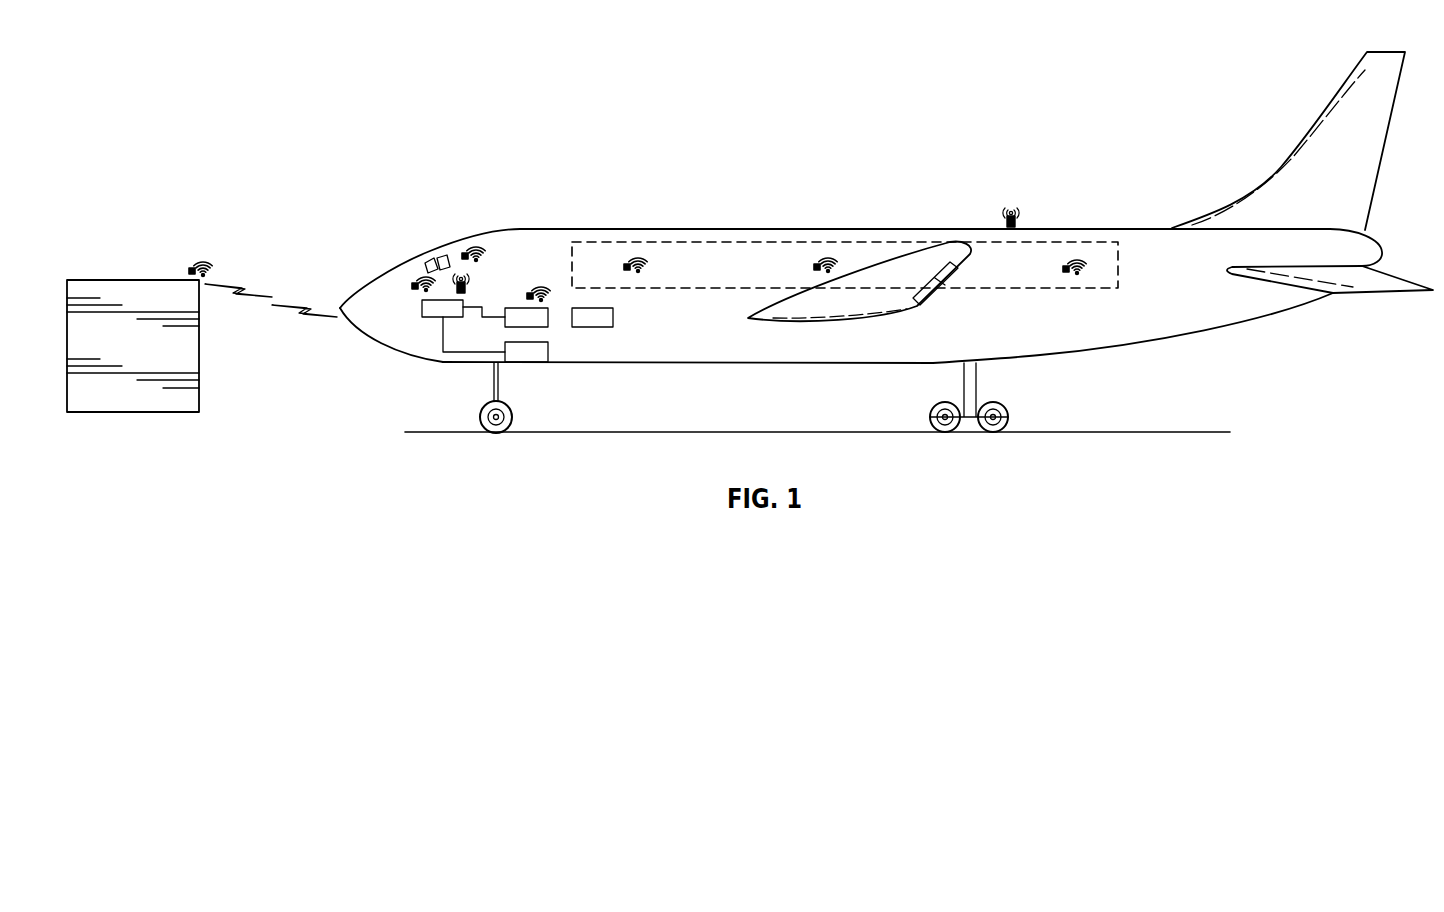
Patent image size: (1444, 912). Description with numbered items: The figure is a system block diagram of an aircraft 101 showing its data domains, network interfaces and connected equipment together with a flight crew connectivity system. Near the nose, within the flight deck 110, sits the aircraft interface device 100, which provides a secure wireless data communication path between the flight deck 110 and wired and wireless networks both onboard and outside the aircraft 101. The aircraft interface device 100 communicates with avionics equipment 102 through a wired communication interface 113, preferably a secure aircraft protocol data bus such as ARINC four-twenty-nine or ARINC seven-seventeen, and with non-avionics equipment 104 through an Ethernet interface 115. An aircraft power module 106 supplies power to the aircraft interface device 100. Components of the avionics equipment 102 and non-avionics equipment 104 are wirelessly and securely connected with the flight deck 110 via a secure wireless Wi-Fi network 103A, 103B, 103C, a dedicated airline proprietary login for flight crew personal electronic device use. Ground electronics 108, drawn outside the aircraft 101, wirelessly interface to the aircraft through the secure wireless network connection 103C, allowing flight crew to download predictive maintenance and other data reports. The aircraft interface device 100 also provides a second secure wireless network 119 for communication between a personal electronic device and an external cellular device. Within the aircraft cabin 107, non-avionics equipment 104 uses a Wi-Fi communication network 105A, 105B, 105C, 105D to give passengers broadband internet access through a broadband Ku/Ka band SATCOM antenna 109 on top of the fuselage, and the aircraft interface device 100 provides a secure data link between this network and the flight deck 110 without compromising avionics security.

The aircraft interface device (AID) 100 is at (428, 318).
The aircraft 101 is at (1203, 318).
The avionics equipment 102 is at (530, 353).
The secure wireless Wi-Fi network 103A is at (424, 288).
The secure wireless Wi-Fi network 103B is at (475, 244).
The secure wireless network connection 103C is at (197, 260).
The non-avionics equipment 104 is at (530, 312).
The Wi-Fi communication network 105A is at (638, 254).
The Wi-Fi communication network 105B is at (833, 255).
The Wi-Fi communication network 105C is at (1077, 254).
The Wi-Fi communication network 105D is at (541, 285).
The aircraft power module 106 is at (603, 318).
The aircraft cabin 107 is at (703, 268).
The ground electronics 108 is at (133, 280).
The broadband Ku/Ka band SATCOM antenna 109 is at (1013, 207).
The flight deck 110 is at (428, 262).
The wired communication interface 113 is at (478, 355).
The Ethernet interface 115 is at (497, 315).
The second secure wireless network 119 is at (457, 278).